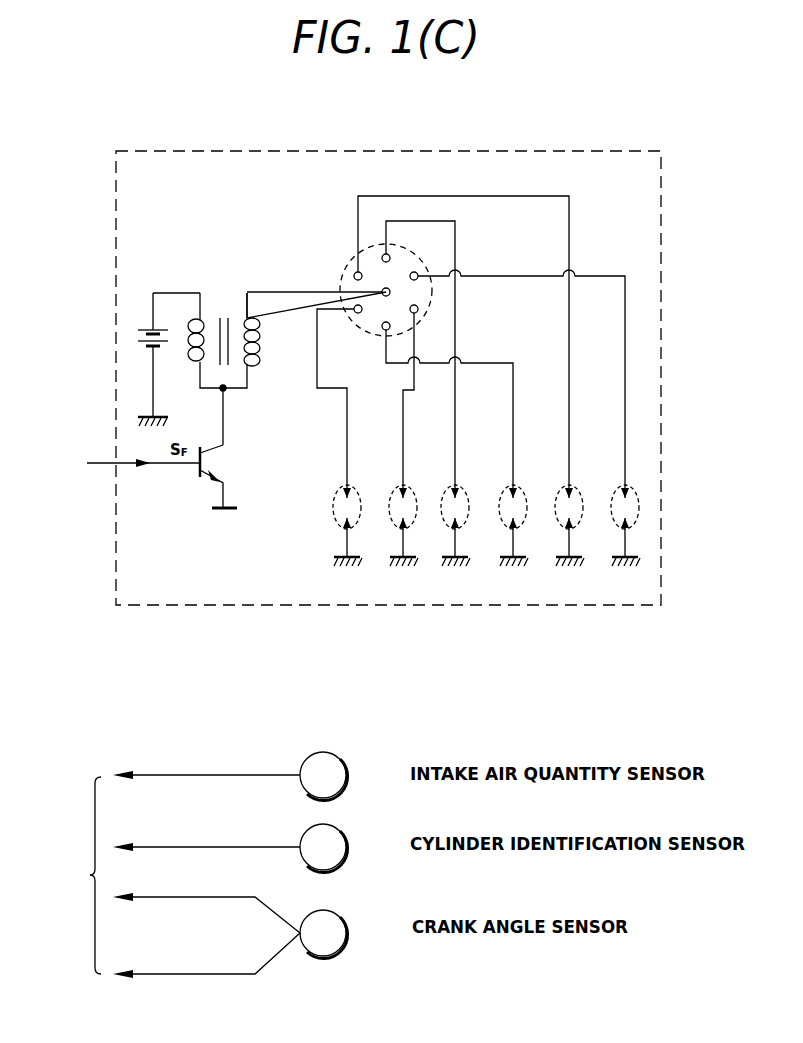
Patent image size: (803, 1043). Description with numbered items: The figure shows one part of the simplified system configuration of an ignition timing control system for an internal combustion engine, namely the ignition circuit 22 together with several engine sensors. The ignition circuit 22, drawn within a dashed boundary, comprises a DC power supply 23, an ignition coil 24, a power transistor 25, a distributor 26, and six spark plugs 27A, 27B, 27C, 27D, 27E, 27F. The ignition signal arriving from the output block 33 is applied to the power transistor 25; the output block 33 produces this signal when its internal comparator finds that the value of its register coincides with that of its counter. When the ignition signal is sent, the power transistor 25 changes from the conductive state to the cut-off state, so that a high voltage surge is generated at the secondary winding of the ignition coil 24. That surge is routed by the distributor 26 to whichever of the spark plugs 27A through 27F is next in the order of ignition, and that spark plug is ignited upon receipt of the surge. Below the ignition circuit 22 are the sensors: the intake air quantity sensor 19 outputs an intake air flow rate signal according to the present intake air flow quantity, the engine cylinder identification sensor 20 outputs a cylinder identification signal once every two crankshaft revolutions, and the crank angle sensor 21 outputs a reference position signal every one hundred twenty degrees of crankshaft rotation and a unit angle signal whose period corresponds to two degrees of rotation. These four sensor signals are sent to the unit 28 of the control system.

The intake air quantity sensor 19 is at (346, 775).
The engine cylinder identification sensor 20 is at (346, 847).
The crank angle sensor 21 is at (346, 933).
The ignition circuit 22 is at (583, 149).
The DC power supply 23 is at (150, 327).
The ignition coil 24 is at (225, 312).
The power transistor 25 is at (224, 459).
The distributor 26 is at (343, 280).
The spark plug 27A is at (336, 488).
The spark plug 27B is at (392, 488).
The spark plug 27C is at (444, 488).
The spark plug 27D is at (502, 488).
The spark plug 27E is at (558, 488).
The spark plug 27F is at (614, 488).
The control unit 28 is at (83, 887).
The output block 33 is at (113, 467).